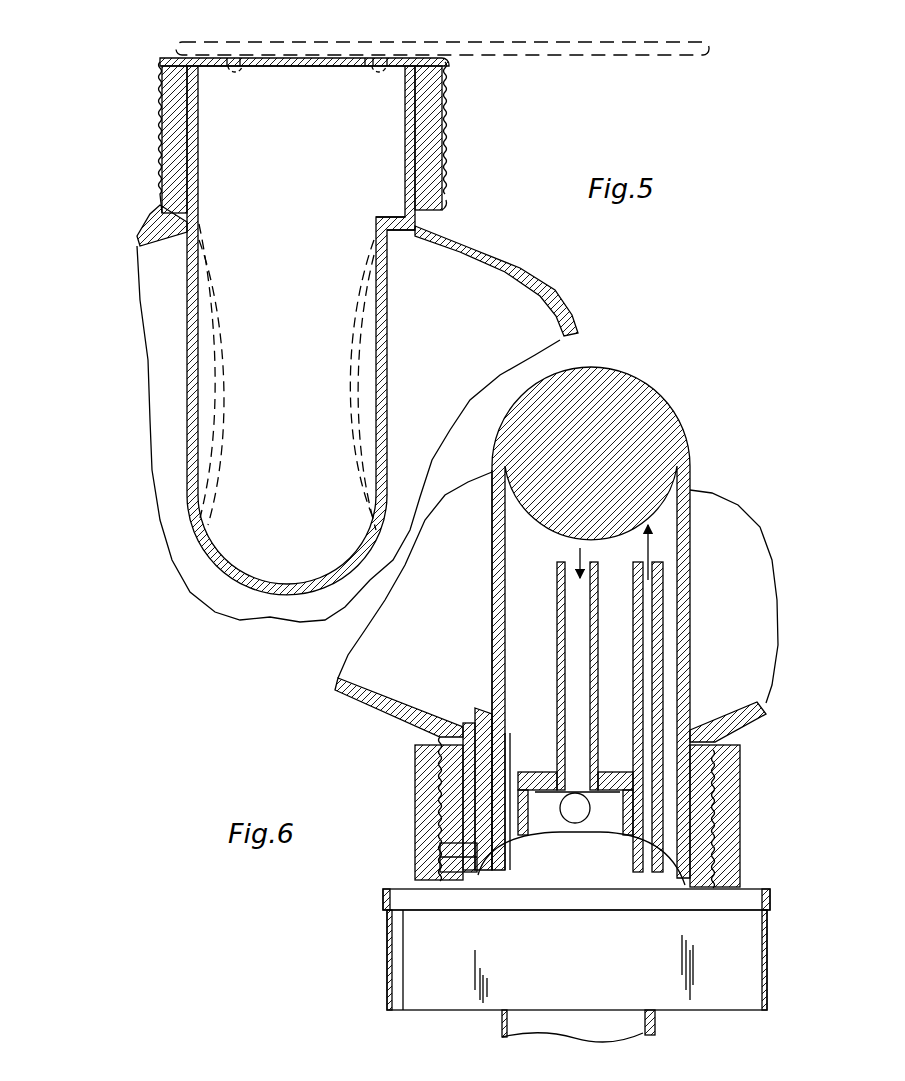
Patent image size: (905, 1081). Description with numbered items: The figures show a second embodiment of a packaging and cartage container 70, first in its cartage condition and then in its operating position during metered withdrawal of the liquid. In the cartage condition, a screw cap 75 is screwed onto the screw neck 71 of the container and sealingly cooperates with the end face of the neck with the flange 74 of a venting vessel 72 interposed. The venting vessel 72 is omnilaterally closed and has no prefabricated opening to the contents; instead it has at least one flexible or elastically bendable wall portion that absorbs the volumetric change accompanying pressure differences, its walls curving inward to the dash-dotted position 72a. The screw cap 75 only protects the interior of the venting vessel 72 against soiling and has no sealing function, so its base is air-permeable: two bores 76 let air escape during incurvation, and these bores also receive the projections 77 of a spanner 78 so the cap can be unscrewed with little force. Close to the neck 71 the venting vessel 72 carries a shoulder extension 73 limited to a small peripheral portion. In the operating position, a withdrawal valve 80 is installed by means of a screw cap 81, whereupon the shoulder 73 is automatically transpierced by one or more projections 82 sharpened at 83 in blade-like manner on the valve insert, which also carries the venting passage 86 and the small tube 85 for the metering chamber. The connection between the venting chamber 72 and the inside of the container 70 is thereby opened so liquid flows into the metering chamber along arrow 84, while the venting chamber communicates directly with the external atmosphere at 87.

In FIG. 5, the packaging and cartage container 70 is at (570, 315).
In FIG. 6, the packaging and cartage container 70 is at (360, 702).
In FIG. 5, the screw neck 71 is at (440, 213).
In FIG. 6, the screw neck 71 is at (453, 778).
In FIG. 5, the venting vessel 72 is at (386, 346).
In FIG. 6, the venting vessel 72 is at (690, 462).
In FIG. 5, the incurved wall position of venting vessel 72a is at (350, 432).
In FIG. 5, the shoulder extension 73 is at (388, 212).
In FIG. 6, the shoulder extension 73 is at (467, 723).
In FIG. 5, the flange 74 is at (448, 70).
In FIG. 6, the flange 74 is at (450, 850).
In FIG. 5, the screw cap 75 is at (448, 160).
In FIG. 5, the bores 76 is at (363, 68).
In FIG. 5, the projections 77 is at (378, 72).
In FIG. 5, the spanner 78 is at (611, 58).
In FIG. 6, the withdrawal valve 80 is at (356, 958).
In FIG. 6, the screw cap 81 is at (420, 847).
In FIG. 6, the projections 82 is at (500, 782).
In FIG. 6, the sharpened edge 83 is at (490, 730).
In FIG. 6, the arrow 84 is at (492, 700).
In FIG. 6, the small tube 85 is at (562, 650).
In FIG. 6, the venting passage 86 is at (637, 562).
In FIG. 6, the atmospheric communication opening 87 is at (746, 887).